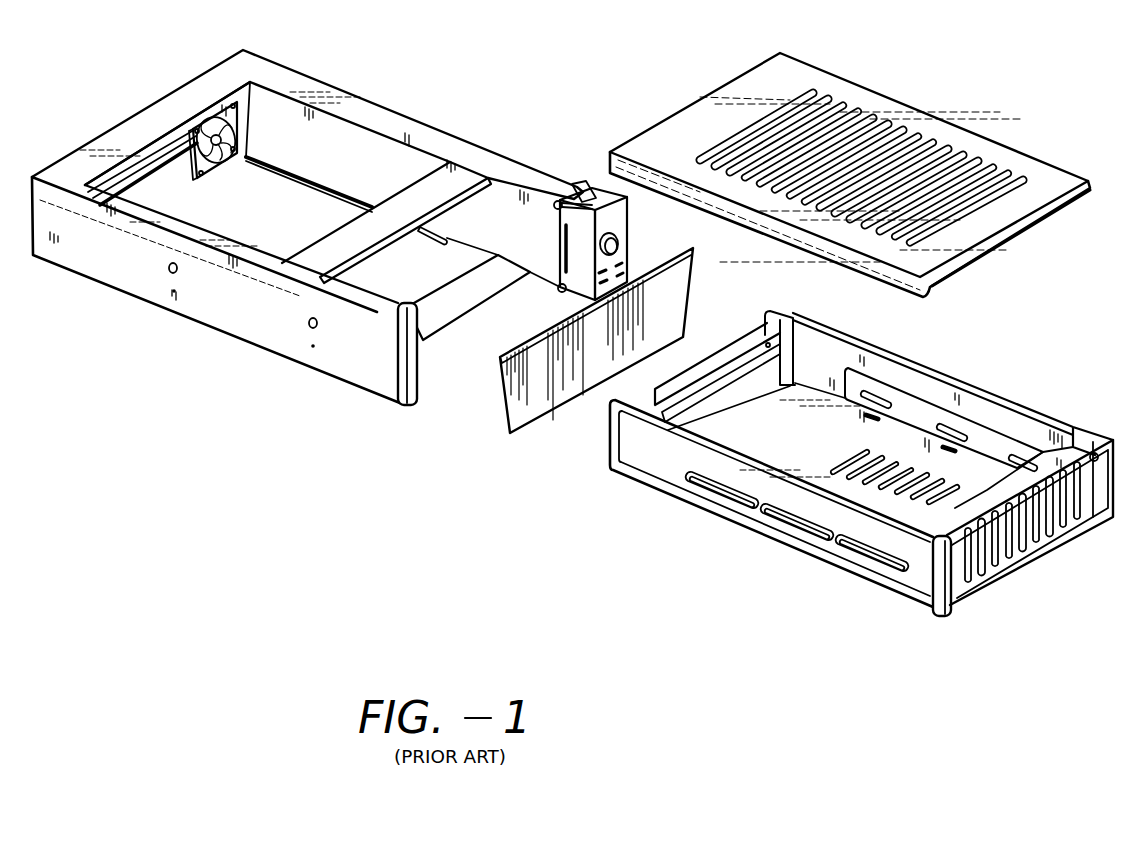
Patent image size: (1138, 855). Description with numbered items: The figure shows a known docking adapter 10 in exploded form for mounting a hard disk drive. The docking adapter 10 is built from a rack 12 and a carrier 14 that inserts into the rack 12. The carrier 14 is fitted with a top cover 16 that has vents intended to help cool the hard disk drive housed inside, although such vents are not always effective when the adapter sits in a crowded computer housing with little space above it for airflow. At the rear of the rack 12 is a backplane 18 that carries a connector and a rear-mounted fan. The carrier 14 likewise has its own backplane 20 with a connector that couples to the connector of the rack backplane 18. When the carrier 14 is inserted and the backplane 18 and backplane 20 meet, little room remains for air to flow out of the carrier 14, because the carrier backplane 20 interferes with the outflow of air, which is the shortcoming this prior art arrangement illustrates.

The docking adapter 10 is at (458, 62).
The rack 12 is at (467, 147).
The carrier 14 is at (1040, 415).
The top cover 16 is at (1070, 173).
The backplane 18 is at (150, 173).
The backplane 20 is at (640, 397).